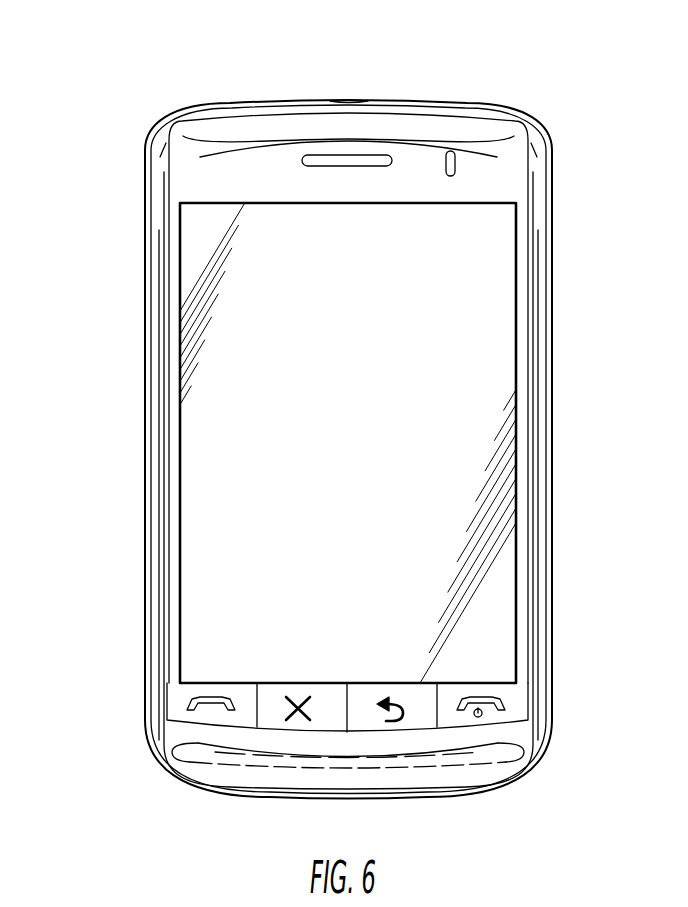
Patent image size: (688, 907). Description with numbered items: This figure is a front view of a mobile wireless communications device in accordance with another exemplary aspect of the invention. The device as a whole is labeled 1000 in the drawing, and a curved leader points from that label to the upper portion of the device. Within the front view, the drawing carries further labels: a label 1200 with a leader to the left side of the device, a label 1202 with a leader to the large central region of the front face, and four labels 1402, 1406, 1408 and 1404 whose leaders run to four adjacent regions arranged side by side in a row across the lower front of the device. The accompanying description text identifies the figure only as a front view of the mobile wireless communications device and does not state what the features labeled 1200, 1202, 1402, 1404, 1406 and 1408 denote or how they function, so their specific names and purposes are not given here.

The mobile communication device 1000 is at (165, 67).
The housing 1200 is at (147, 322).
The display screen 1202 is at (493, 333).
The call button 1402 is at (183, 695).
The end call / power button 1404 is at (447, 715).
The cancel button 1406 is at (275, 698).
The back button 1408 is at (402, 722).